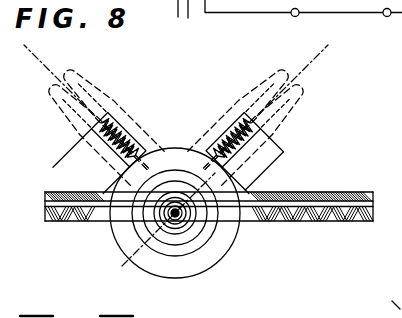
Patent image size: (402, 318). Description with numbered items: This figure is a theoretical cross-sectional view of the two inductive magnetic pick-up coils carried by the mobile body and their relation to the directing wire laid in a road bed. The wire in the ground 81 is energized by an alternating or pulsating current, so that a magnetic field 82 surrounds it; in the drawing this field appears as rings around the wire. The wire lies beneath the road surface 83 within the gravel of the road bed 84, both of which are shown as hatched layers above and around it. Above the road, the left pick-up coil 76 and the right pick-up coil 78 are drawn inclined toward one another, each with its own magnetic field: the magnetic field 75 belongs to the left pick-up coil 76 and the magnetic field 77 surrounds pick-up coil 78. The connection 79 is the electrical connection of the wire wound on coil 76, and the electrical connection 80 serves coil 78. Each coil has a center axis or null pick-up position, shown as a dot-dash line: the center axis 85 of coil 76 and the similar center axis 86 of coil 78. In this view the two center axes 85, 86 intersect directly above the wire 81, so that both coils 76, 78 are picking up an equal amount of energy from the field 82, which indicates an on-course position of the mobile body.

The magnetic field of the left pick-up coil 75 is at (90, 81).
The left pick-up coil 76 is at (118, 122).
The magnetic field surrounding pick-up coil 77 is at (298, 104).
The pick-up coil 78 is at (232, 125).
The connection of the wire wound on coil 79 is at (108, 178).
The electrical connection of coil 80 is at (275, 142).
The wire in the ground 81 is at (175, 220).
The magnetic field 82 is at (150, 235).
The road surface 83 is at (321, 190).
The gravel of the road bed 84 is at (343, 212).
The center axis or null pick-up position of coil 85 is at (43, 66).
The center axis or null position of coil 86 is at (316, 56).